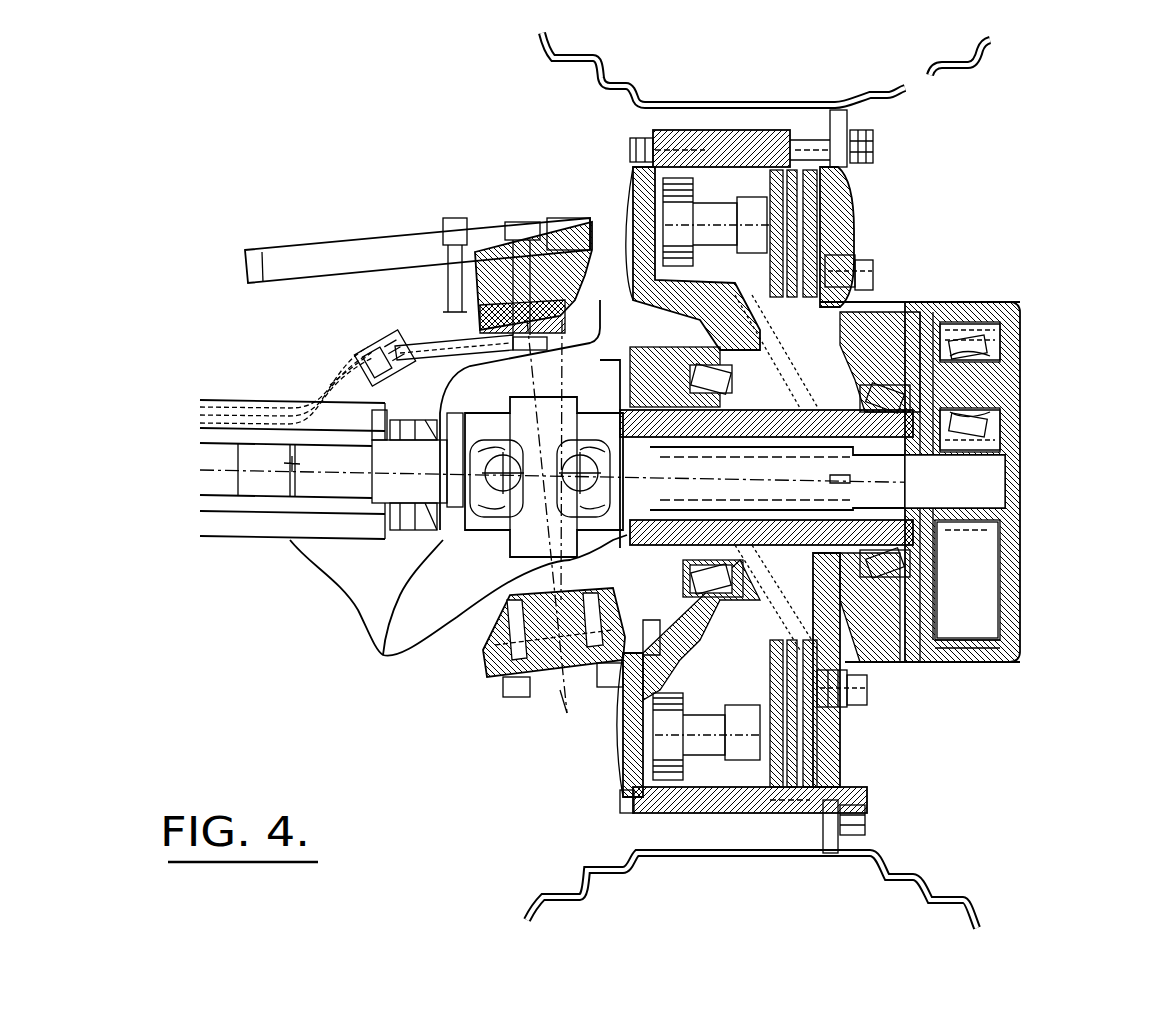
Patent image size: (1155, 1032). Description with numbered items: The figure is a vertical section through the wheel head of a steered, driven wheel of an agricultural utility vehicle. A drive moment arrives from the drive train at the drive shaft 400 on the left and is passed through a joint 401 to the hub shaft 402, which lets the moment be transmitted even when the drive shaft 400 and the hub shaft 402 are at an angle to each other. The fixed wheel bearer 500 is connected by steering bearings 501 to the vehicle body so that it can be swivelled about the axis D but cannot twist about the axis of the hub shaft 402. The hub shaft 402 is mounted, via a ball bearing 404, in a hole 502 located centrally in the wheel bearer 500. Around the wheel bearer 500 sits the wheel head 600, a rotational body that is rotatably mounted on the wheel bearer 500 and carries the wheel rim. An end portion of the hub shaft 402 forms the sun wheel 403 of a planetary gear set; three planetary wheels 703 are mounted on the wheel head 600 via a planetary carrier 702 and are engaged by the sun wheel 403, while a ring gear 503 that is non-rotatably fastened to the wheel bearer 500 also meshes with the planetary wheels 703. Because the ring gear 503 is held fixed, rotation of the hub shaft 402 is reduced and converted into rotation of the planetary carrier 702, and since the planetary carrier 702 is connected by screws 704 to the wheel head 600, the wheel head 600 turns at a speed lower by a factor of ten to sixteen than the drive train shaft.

The drive shaft 400 is at (318, 488).
The joint 401 is at (473, 503).
The hub shaft 402 is at (630, 458).
The sun wheel 403 is at (973, 608).
The ball bearing 404 is at (655, 466).
The wheel bearer 500 is at (650, 625).
The steering bearings 501 is at (470, 300).
The hole 502 is at (850, 530).
The ring gear 503 is at (948, 652).
The wheel head 600 is at (855, 207).
The planetary carrier 702 is at (995, 410).
The planetary wheels 703 is at (970, 340).
The screws 704 is at (870, 703).
The axis D is at (567, 693).